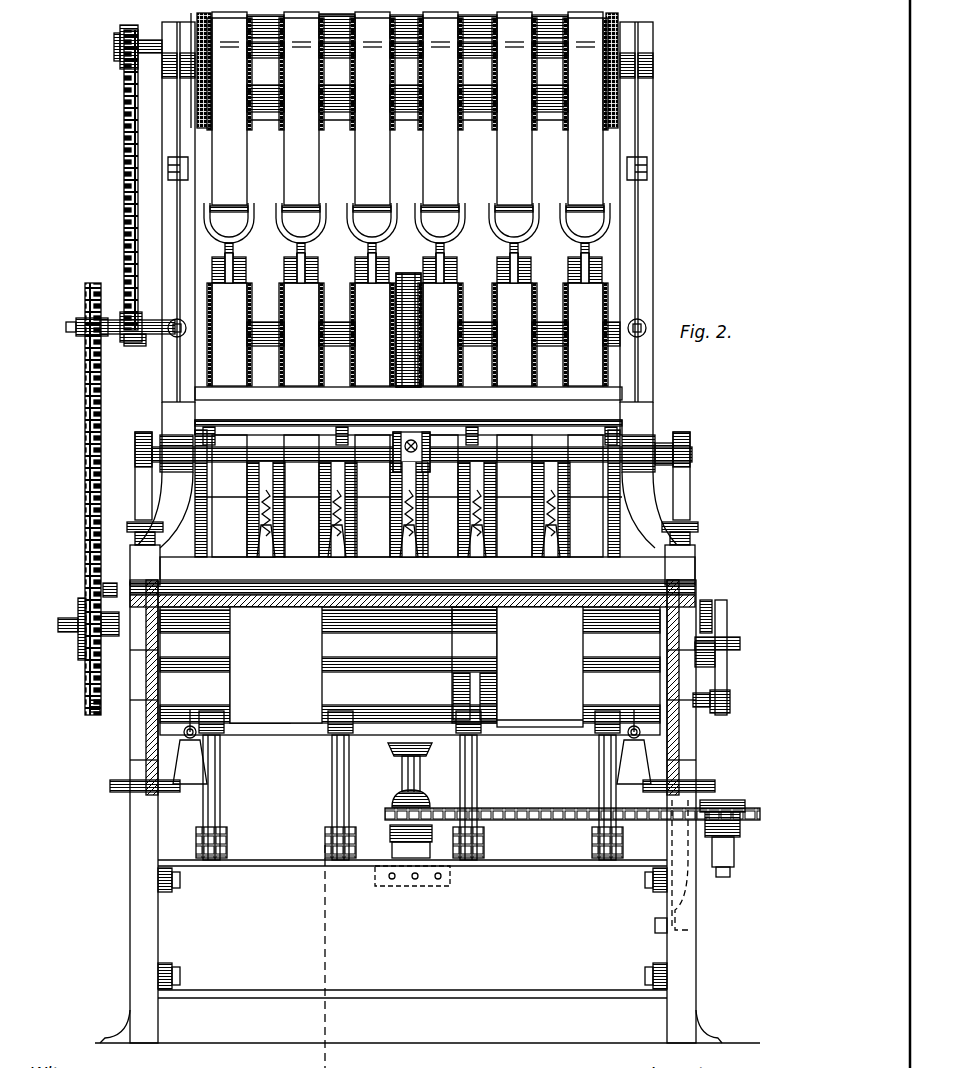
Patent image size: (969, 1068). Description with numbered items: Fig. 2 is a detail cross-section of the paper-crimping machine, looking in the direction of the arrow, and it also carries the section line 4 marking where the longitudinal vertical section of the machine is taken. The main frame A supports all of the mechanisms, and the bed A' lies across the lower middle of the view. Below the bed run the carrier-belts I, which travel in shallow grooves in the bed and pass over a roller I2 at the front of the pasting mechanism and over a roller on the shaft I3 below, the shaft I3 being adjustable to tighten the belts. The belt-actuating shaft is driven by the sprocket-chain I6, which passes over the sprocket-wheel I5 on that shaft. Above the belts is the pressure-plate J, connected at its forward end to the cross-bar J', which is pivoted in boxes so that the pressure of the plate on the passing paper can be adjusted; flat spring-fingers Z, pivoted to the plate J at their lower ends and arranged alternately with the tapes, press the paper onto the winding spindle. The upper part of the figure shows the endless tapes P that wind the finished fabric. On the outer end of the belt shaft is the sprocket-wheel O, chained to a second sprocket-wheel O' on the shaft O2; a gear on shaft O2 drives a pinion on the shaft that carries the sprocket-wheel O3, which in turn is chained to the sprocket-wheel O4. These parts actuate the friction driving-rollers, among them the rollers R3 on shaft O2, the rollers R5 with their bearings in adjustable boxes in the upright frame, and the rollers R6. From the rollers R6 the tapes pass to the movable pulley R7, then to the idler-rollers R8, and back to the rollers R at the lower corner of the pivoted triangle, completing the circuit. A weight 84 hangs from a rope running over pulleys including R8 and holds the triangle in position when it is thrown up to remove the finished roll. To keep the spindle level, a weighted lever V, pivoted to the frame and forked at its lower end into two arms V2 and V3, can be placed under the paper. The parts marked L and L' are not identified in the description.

The section line 4 is at (337, 12).
The sprocket-wheel O4 is at (116, 58).
The friction driving-rollers R6 is at (160, 48).
The idler-rollers R8 is at (490, 36).
The rollers R is at (248, 120).
The friction driving-rollers R5 is at (430, 120).
The tapes P is at (578, 350).
The movable pulley R7 is at (562, 208).
The shaft O2 is at (148, 316).
The sprocket-wheel O' is at (81, 499).
The sprocket-wheel O3 is at (132, 348).
The friction driving-rollers R3 is at (240, 300).
The sprocket-wheel O is at (433, 330).
The weighted lever V is at (412, 432).
The arm V2 is at (690, 492).
The arm V3 is at (135, 486).
The rack bar L' is at (407, 600).
The spring-fingers Z is at (325, 552).
The bed A' is at (412, 581).
The cross-bar J' is at (427, 483).
The pressure-plate J is at (415, 303).
The sprocket-wheel I5 is at (265, 690).
The carrier-belts I is at (60, 626).
The shaft I3 is at (176, 690).
The roller I2 is at (322, 636).
The sprocket-chain I6 is at (100, 716).
The weight 84 is at (412, 747).
The rod L is at (409, 785).
The main frame A is at (427, 824).